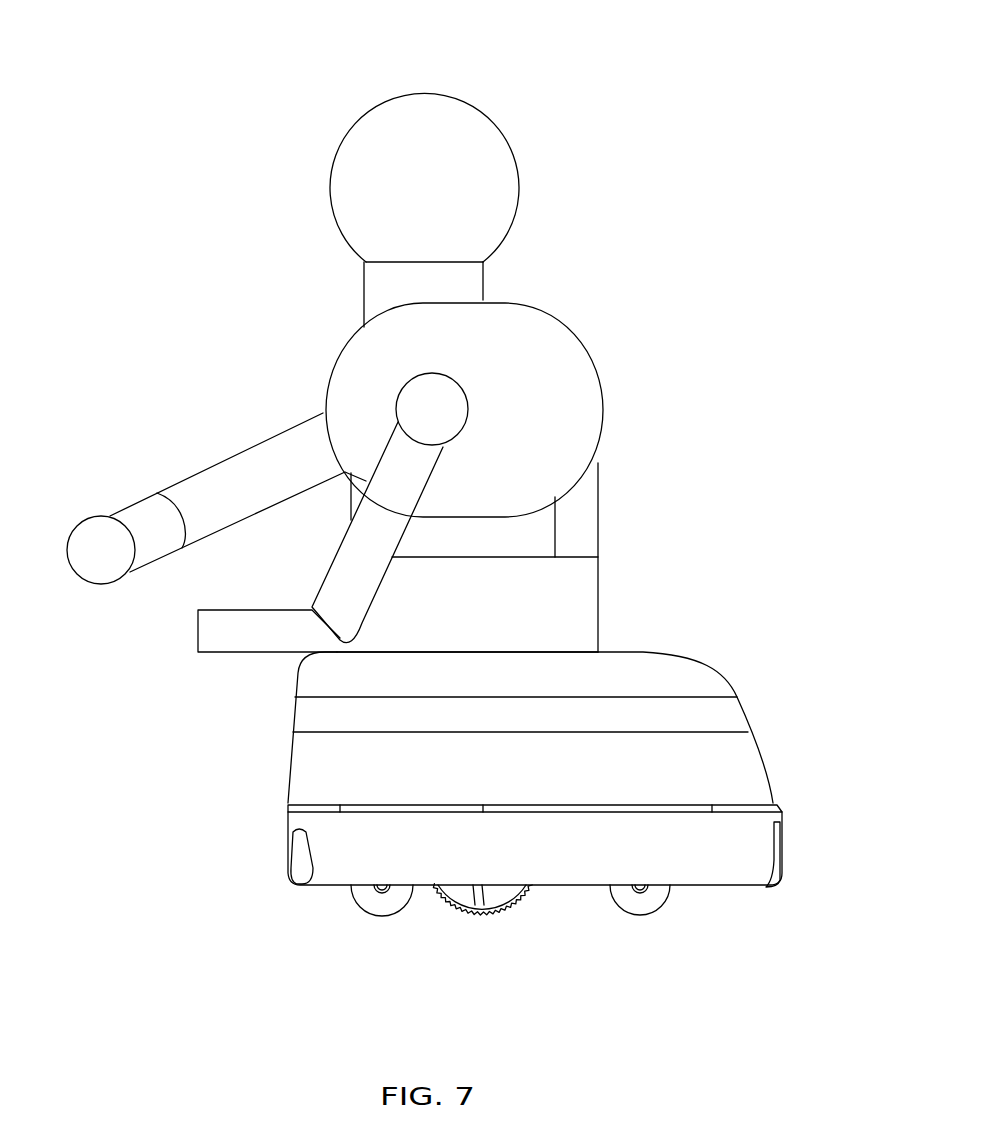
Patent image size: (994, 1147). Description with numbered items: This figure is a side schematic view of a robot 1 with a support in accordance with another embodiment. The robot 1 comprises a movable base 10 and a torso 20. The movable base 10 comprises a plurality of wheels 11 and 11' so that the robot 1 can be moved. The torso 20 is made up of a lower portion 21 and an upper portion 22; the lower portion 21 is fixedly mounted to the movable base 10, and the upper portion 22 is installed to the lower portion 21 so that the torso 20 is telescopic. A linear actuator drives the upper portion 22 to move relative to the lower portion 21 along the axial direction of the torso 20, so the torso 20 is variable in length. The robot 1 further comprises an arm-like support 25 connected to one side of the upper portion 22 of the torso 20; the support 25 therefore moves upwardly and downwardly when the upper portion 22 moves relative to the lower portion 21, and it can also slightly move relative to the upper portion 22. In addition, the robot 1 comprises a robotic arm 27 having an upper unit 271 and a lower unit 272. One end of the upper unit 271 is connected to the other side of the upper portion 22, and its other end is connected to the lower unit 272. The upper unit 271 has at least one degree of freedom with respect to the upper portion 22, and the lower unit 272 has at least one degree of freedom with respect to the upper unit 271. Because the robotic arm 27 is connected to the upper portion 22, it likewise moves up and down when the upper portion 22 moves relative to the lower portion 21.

The robot 1 is at (677, 133).
The movable base 10 is at (713, 848).
The wheel 11 is at (499, 927).
The wheel 11' is at (536, 928).
The torso 20 is at (617, 353).
The lower portion 21 is at (580, 603).
The upper portion 22 is at (537, 348).
The support 25 is at (225, 633).
The robotic arm 27 is at (215, 424).
The upper unit 271 is at (220, 483).
The lower unit 272 is at (138, 517).